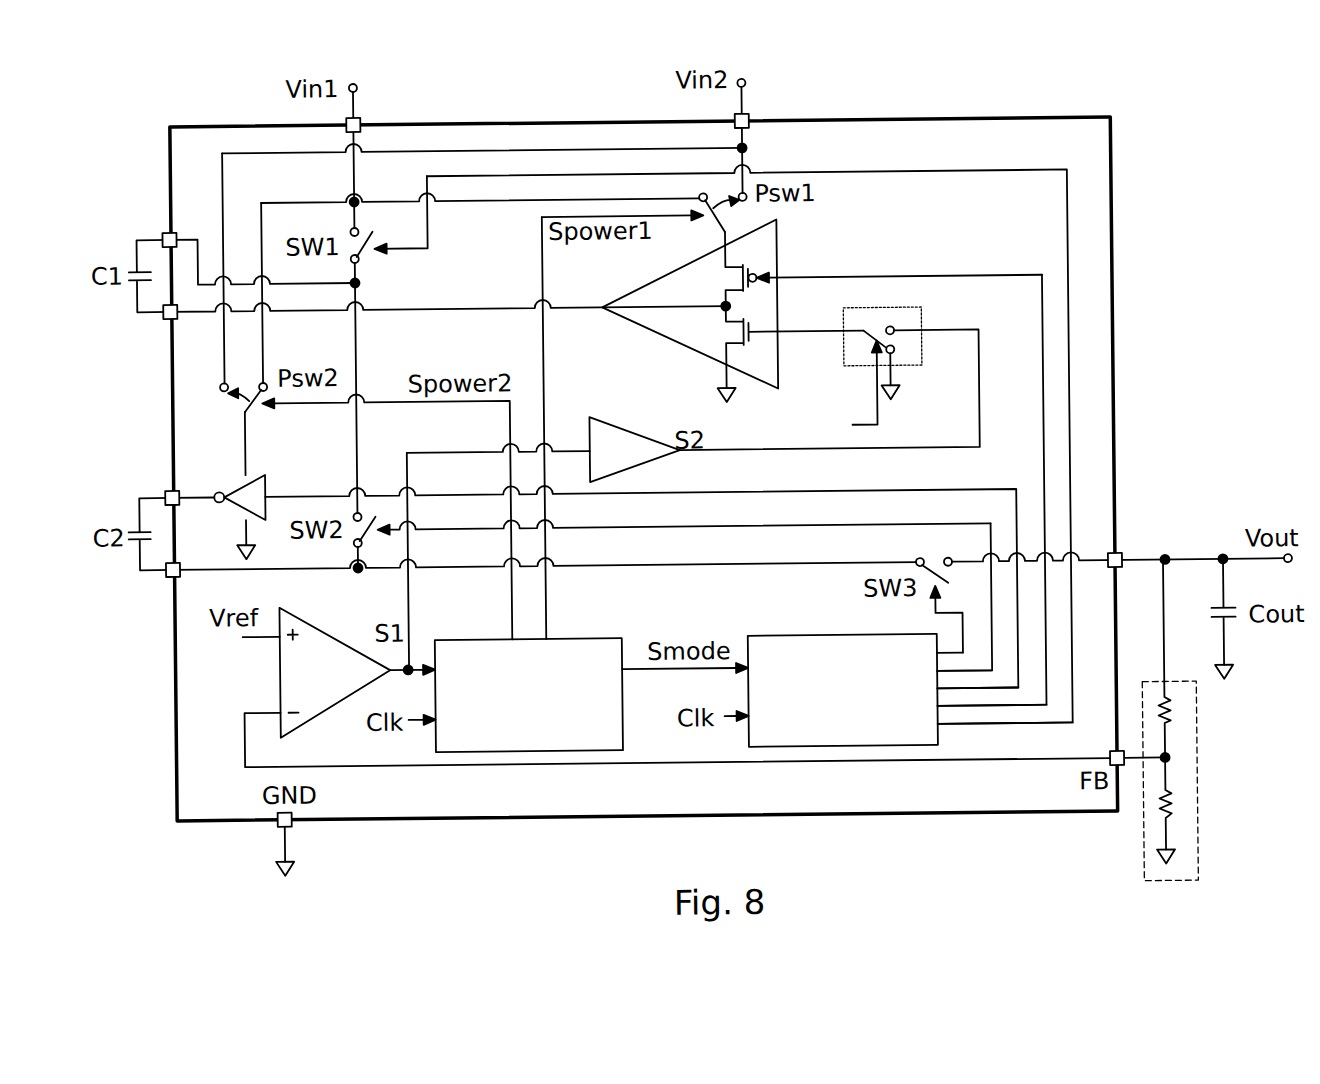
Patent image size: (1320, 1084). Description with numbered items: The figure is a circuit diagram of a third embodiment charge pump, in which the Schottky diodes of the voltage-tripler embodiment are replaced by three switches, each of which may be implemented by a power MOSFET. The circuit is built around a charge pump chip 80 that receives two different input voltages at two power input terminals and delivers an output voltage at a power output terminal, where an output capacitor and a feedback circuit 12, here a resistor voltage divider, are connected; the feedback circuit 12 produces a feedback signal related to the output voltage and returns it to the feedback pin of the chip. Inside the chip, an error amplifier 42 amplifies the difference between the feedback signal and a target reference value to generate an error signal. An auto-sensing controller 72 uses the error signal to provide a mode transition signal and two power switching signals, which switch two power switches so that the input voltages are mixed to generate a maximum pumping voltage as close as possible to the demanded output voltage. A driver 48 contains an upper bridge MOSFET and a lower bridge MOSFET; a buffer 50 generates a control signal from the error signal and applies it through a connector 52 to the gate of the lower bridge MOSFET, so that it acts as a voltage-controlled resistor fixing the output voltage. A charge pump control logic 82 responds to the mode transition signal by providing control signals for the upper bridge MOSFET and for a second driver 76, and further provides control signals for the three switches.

The charge pump chip 80 is at (1114, 365).
The connector 52 is at (880, 309).
The driver 48 is at (781, 363).
The buffer 50 is at (638, 427).
The driver 76 is at (267, 478).
The error amplifier 42 is at (339, 634).
The auto-sensing controller 72 is at (575, 637).
The charge pump control logic 82 is at (844, 638).
The feedback circuit 12 is at (1194, 764).